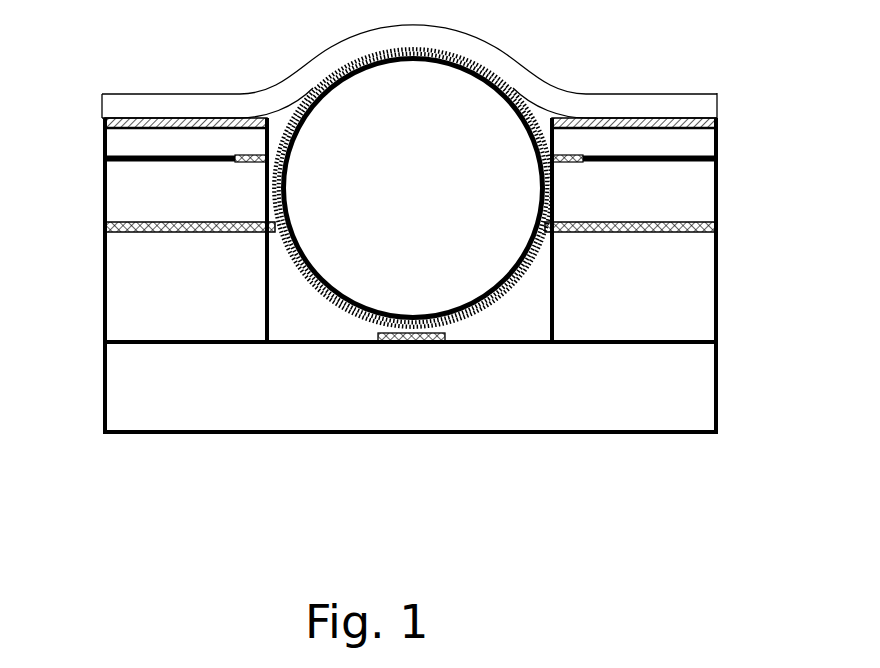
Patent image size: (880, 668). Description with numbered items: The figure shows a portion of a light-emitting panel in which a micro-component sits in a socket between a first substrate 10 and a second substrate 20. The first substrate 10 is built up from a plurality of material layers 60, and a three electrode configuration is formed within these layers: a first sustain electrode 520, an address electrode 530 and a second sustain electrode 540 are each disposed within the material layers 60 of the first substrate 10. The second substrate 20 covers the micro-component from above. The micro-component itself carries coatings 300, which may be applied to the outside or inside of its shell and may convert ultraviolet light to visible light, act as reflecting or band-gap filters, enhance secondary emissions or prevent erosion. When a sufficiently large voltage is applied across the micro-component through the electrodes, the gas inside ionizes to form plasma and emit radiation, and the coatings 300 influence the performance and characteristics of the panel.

The first substrate 10 is at (720, 117).
The second substrate 20 is at (510, 65).
The material layers 60 is at (707, 143).
The coatings 300 is at (347, 318).
The first sustain electrode 520 is at (252, 160).
The address electrode 530 is at (137, 234).
The second sustain electrode 540 is at (425, 344).